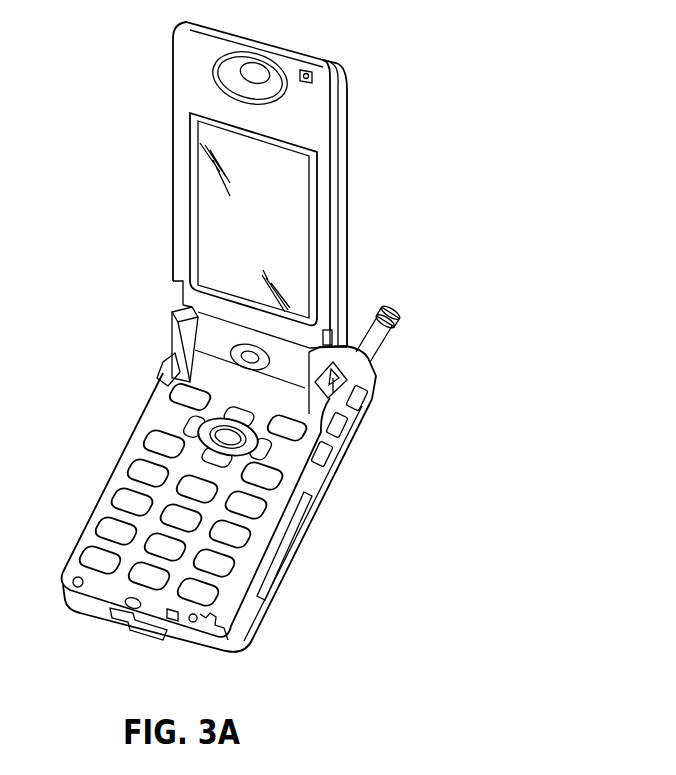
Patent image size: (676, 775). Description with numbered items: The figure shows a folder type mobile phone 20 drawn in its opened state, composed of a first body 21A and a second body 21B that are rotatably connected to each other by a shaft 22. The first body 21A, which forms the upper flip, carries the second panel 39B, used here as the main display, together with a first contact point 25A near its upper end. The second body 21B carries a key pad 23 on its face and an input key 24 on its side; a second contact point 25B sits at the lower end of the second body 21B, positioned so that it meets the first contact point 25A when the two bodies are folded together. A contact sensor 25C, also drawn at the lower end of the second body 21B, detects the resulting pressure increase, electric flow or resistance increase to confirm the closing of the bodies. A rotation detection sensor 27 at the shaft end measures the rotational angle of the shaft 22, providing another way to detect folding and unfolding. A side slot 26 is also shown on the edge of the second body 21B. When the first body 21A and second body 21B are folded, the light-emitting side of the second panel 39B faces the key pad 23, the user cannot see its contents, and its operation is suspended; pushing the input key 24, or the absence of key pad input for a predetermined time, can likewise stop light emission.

The folder type mobile phone 20 is at (448, 208).
The first body 21A is at (178, 92).
The second body 21B is at (137, 447).
The shaft 22 is at (175, 320).
The key pad 23 is at (104, 486).
The input key 24 is at (327, 453).
The first contact point 25A is at (305, 68).
The second contact point 25B is at (163, 609).
The contact sensor 25C is at (236, 643).
The side slot 26 is at (275, 580).
The rotation detection sensor 27 is at (348, 377).
The second panel 39B is at (226, 233).